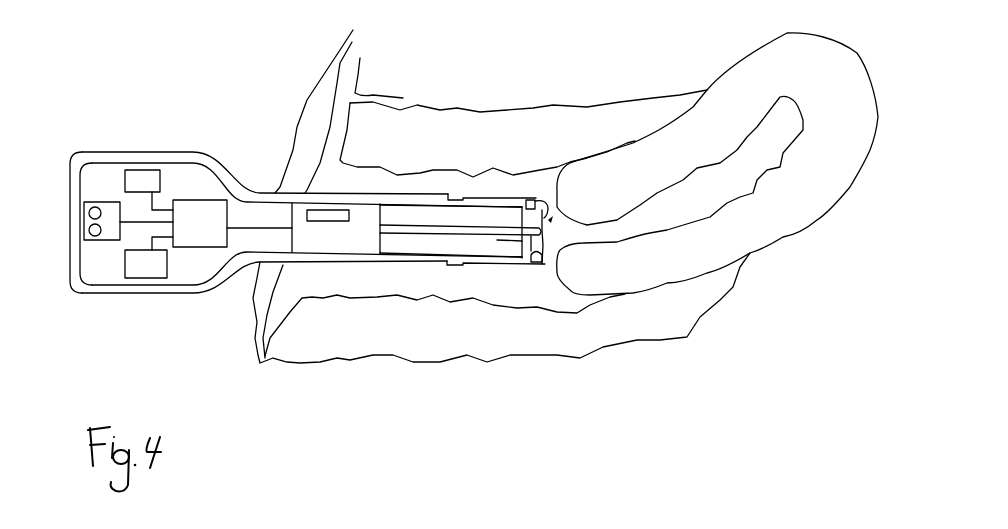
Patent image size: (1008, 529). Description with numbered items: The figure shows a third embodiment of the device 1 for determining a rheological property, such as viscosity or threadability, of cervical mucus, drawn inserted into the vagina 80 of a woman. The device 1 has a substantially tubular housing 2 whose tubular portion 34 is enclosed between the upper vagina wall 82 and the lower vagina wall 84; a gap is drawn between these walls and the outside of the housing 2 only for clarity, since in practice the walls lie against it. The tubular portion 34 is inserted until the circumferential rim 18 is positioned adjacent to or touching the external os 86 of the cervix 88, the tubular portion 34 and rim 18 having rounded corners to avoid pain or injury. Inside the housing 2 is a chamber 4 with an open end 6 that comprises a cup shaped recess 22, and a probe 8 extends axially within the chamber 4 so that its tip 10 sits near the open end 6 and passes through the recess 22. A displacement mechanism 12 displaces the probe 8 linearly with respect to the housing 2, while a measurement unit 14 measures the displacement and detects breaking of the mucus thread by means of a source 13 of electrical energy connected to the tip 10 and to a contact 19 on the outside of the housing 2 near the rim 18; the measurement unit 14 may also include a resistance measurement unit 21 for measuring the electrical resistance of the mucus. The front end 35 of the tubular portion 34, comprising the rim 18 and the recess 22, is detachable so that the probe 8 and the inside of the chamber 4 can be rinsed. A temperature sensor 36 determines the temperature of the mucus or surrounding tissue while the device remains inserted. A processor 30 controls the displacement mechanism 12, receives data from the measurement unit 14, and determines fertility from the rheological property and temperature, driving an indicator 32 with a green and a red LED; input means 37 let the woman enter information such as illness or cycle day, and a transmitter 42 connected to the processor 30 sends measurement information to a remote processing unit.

The device 1 is at (146, 324).
The housing 2 is at (442, 327).
The tubular portion 34 is at (425, 262).
The chamber 4 is at (413, 217).
The open end 6 is at (553, 212).
The probe 8 is at (498, 241).
The tip 10 is at (587, 224).
The displacement mechanism 12 is at (326, 238).
The measurement unit 14 is at (342, 245).
The source of electrical energy 13 is at (313, 213).
The circumferential rim 18 is at (539, 355).
The contact 19 is at (525, 200).
The resistance measurement unit 21 is at (339, 131).
The cup shaped recess 22 is at (538, 200).
The processor 30 is at (213, 240).
The indicator 32 is at (107, 240).
The front end 35 is at (480, 262).
The temperature sensor 36 is at (546, 266).
The input means 37 is at (140, 178).
The transmitter 42 is at (137, 268).
The vagina 80 is at (378, 277).
The upper vagina wall 82 is at (480, 125).
The lower vagina wall 84 is at (475, 342).
The external os 86 is at (715, 236).
The cervix 88 is at (715, 236).